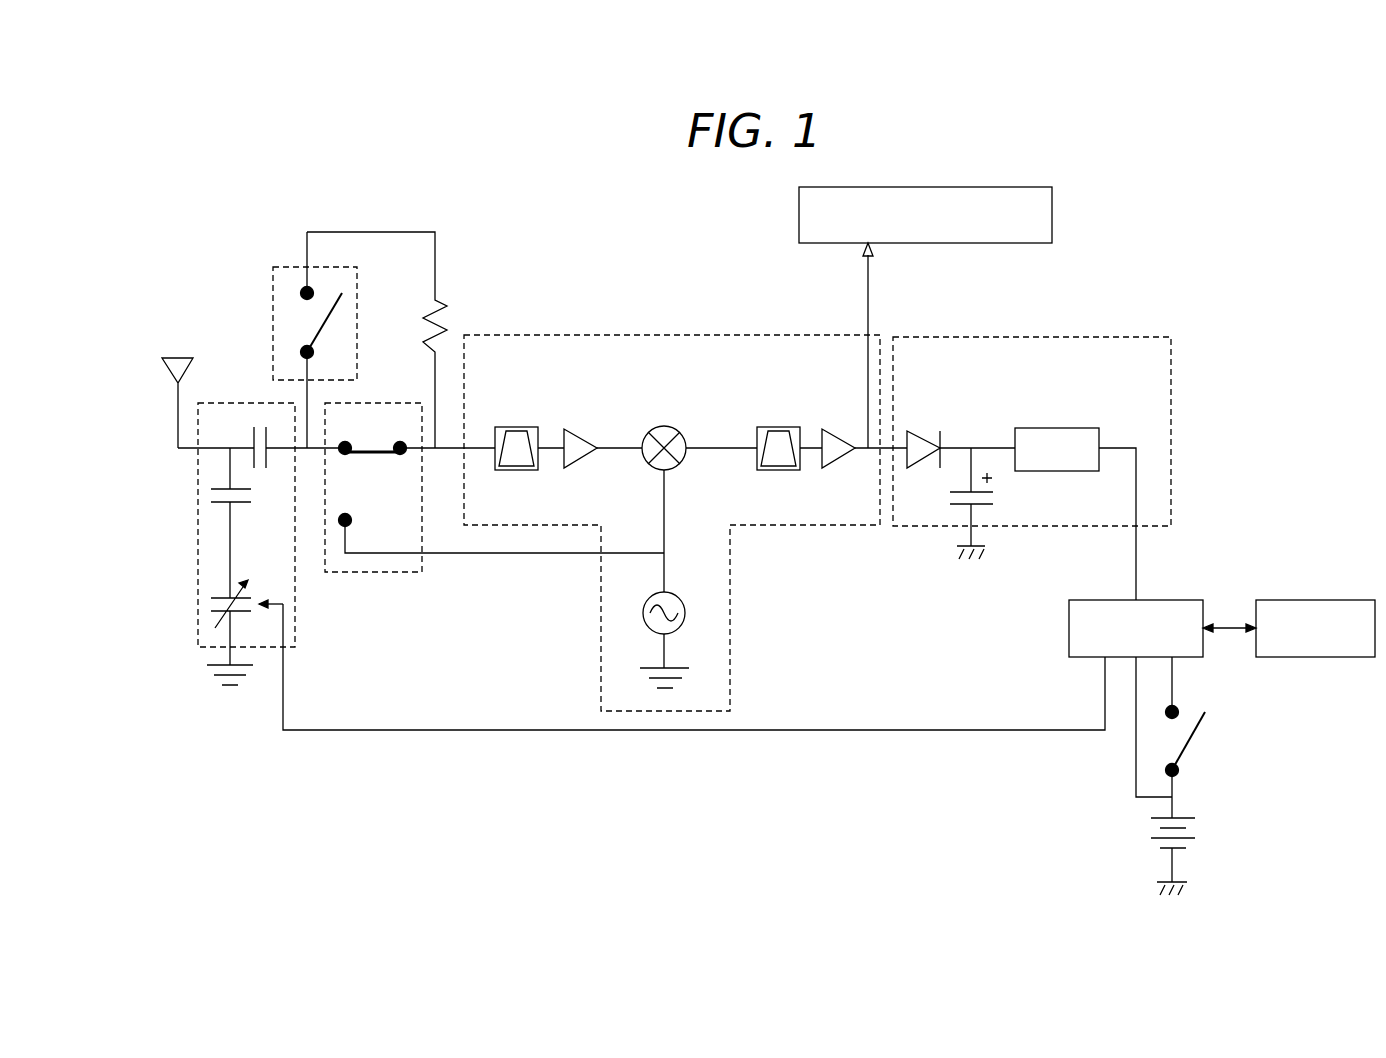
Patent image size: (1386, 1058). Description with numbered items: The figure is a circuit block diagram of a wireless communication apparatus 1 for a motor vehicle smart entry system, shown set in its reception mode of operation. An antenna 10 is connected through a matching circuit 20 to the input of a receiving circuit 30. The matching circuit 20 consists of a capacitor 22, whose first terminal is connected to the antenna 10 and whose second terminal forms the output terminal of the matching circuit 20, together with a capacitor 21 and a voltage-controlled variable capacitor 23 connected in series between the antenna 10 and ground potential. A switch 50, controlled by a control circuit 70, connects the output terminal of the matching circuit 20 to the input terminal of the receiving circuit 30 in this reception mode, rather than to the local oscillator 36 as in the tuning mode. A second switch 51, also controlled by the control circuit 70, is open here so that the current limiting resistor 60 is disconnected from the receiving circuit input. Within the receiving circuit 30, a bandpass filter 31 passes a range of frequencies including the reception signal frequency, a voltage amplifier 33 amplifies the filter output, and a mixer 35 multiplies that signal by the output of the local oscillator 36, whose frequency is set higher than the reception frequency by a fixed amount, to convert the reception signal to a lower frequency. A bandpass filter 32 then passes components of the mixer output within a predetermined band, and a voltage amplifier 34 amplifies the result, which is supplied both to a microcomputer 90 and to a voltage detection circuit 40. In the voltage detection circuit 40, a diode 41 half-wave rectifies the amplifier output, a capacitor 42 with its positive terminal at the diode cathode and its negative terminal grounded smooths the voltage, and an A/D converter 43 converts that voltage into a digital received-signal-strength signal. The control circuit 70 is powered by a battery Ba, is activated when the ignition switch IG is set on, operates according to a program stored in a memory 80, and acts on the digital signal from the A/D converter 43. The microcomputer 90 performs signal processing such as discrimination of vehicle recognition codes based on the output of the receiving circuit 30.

The wireless communication apparatus 1 is at (366, 746).
The antenna 10 is at (175, 357).
The matching circuit 20 is at (213, 544).
The capacitor 21 is at (215, 505).
The capacitor 22 is at (253, 432).
The variable capacitor 23 is at (217, 612).
The receiving circuit 30 is at (567, 335).
The bandpass filter 31 is at (512, 470).
The bandpass filter 32 is at (780, 427).
The voltage amplifier 33 is at (578, 470).
The voltage amplifier 34 is at (838, 468).
The mixer 35 is at (664, 426).
The local oscillator 36 is at (685, 620).
The voltage detection circuit 40 is at (1127, 337).
The diode 41 is at (920, 468).
The capacitor 42 is at (985, 506).
The A/D converter 43 is at (1055, 428).
The switch 50 is at (375, 572).
The switch 51 is at (293, 267).
The resistor 60 is at (445, 318).
The control circuit 70 is at (1190, 600).
The memory 80 is at (1330, 600).
The microcomputer 90 is at (1053, 208).
The ignition switch IG is at (1190, 742).
The battery Ba is at (1195, 833).